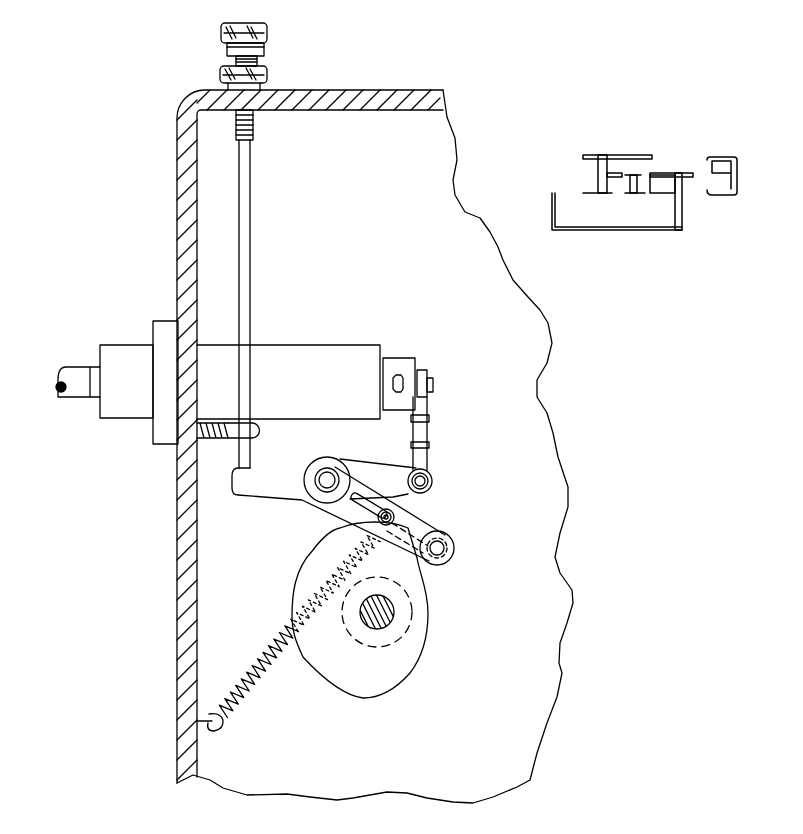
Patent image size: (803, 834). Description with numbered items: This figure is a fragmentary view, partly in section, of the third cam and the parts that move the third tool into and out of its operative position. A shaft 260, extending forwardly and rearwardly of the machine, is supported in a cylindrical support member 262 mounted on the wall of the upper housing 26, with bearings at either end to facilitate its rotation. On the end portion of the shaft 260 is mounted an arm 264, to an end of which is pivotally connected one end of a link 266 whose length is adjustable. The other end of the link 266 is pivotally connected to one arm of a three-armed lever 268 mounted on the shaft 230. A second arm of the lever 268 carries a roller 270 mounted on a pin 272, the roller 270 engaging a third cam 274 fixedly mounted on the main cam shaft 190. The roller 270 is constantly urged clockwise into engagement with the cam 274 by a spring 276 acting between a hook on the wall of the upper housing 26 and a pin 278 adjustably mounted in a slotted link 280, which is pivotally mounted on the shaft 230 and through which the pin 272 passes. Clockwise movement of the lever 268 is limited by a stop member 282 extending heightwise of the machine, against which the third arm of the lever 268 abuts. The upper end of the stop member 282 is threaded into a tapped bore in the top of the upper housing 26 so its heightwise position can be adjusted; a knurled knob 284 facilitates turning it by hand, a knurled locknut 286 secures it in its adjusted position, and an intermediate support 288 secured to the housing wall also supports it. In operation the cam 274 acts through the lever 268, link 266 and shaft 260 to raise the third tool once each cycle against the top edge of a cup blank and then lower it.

The upper housing 26 is at (177, 533).
The main cam shaft 190 is at (392, 616).
The shaft 230 is at (328, 478).
The shaft 260 is at (100, 371).
The cylindrical support member 262 is at (153, 346).
The arm 264 is at (400, 362).
The link 266 is at (428, 435).
The three-armed lever 268 is at (388, 468).
The roller 270 is at (449, 560).
The pin 272 is at (447, 548).
The third cam 274 is at (385, 687).
The spring 276 is at (255, 664).
The pin 278 is at (394, 518).
The slotted link 280 is at (360, 508).
The stop member 282 is at (252, 268).
The knurled knob 284 is at (268, 34).
The knurled locknut 286 is at (268, 78).
The intermediate support 288 is at (223, 428).